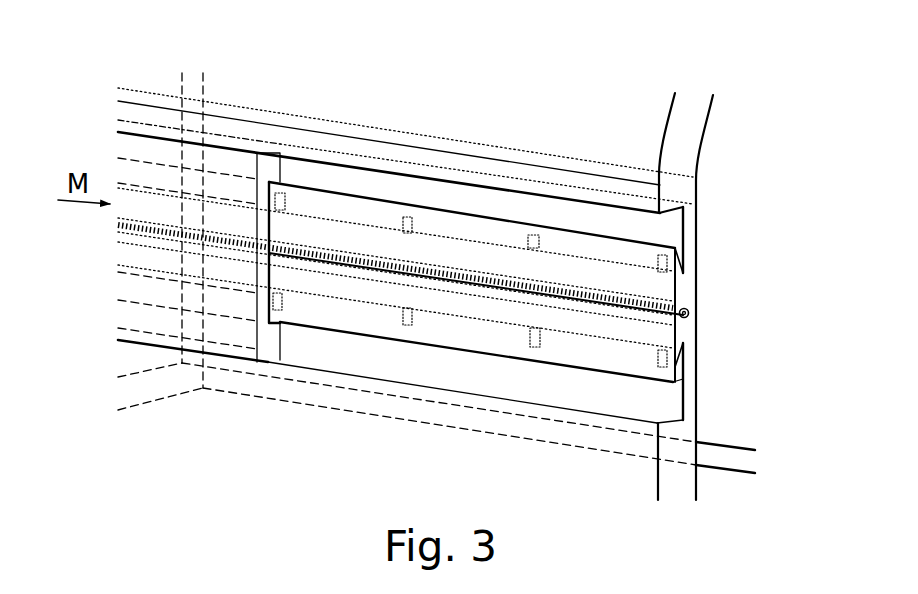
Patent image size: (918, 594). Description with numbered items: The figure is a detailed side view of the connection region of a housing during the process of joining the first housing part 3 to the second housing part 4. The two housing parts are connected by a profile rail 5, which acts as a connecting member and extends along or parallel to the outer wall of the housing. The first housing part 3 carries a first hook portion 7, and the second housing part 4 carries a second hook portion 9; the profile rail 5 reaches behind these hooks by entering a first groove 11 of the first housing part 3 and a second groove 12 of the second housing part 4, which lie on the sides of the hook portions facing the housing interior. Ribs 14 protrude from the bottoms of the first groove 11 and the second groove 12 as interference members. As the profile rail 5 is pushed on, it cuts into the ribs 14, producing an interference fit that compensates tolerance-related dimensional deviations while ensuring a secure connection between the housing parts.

The first housing part 3 is at (683, 487).
The second housing part 4 is at (683, 130).
The profile rail 5 is at (223, 158).
The first hook portion 7 is at (684, 349).
The second hook portion 9 is at (598, 246).
The first groove 11 is at (690, 365).
The second groove 12 is at (690, 250).
The ribs 14 is at (286, 191).